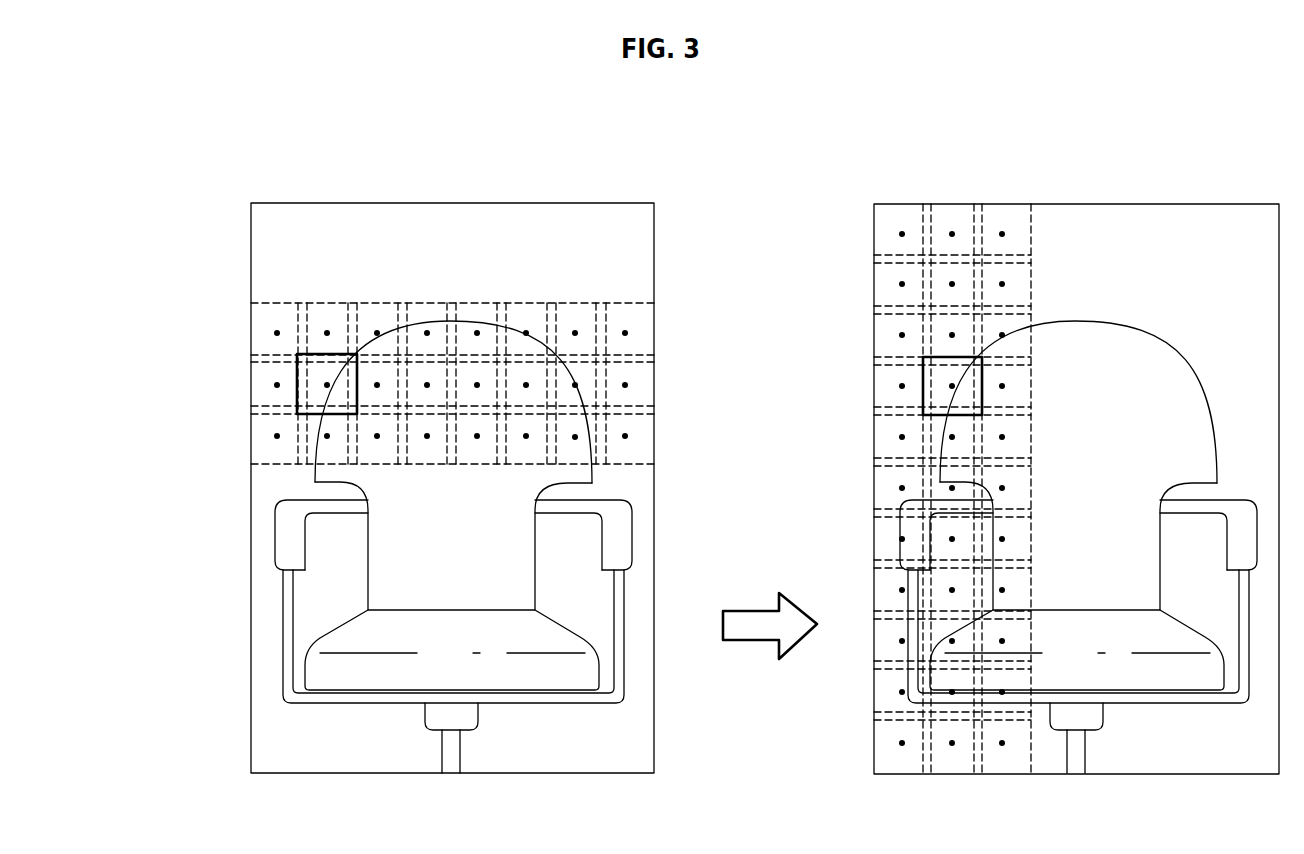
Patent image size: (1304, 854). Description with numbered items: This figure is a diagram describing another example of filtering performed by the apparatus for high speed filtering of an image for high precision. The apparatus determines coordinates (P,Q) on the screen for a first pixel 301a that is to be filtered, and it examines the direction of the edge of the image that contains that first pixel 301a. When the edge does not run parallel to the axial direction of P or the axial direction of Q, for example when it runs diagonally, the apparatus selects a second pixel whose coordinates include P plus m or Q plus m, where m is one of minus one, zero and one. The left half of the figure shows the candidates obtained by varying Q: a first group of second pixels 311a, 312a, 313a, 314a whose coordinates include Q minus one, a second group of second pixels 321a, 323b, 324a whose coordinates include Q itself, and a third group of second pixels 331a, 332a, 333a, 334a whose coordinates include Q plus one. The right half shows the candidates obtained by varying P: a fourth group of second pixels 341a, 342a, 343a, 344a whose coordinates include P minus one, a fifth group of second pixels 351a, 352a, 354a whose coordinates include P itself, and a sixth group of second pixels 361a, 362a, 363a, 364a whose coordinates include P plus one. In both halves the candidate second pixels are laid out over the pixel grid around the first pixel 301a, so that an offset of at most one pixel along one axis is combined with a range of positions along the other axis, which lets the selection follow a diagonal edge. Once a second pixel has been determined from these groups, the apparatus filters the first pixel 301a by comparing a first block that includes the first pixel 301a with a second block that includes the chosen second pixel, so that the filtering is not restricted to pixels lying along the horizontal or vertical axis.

The first pixel 301a is at (327, 385).
The second pixel_#1_1 311a is at (277, 436).
The second pixel_#1_2 312a is at (327, 436).
The second pixel_#1_3 313a is at (377, 436).
The second pixel_#1_4 314a is at (575, 437).
The second pixel_#2_1 321a is at (277, 384).
The second pixel_#2_3 323b is at (377, 384).
The second pixel_#2_4 324a is at (575, 385).
The second pixel_#3_1 331a is at (277, 333).
The second pixel_#3_2 332a is at (327, 333).
The second pixel_#3_3 333a is at (377, 333).
The second pixel_#3_4 334a is at (575, 333).
The second pixel_#4_1 341a is at (902, 284).
The second pixel_#4_2 342a is at (902, 335).
The second pixel_#4_3 343a is at (902, 386).
The second pixel_#4_4 344a is at (902, 437).
The second pixel_#5_1 351a is at (952, 284).
The second pixel_#5_2 352a is at (952, 335).
The second pixel_#5_4 354a is at (952, 437).
The second pixel_#6_1 361a is at (1002, 284).
The second pixel_#6_2 362a is at (1002, 335).
The second pixel_#6_3 363a is at (1002, 386).
The second pixel_#6_4 364a is at (1002, 437).